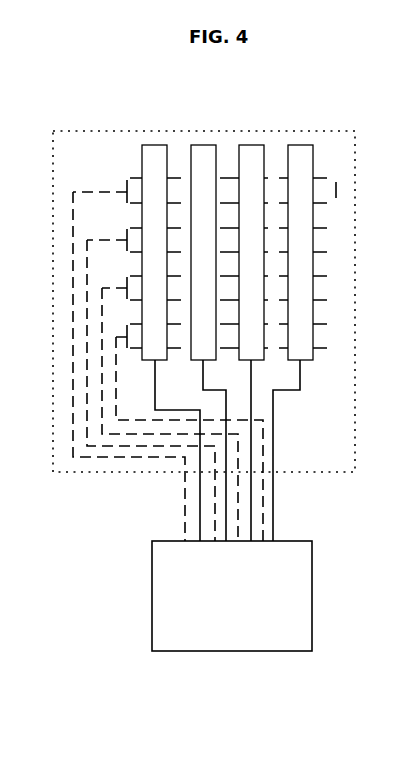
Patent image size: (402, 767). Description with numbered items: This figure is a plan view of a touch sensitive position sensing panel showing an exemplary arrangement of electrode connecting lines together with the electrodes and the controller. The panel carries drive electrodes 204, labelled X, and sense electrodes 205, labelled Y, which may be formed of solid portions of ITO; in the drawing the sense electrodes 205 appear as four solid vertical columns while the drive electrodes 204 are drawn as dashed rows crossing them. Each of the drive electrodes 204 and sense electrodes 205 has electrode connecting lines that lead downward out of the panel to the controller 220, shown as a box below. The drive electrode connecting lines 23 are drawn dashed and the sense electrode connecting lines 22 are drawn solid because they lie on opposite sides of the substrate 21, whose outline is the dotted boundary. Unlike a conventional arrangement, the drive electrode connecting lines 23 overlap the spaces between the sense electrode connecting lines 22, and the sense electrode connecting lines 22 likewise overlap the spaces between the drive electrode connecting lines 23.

The substrate 21 is at (343, 130).
The sense electrode connecting lines 22 is at (253, 397).
The drive electrode connecting lines 23 is at (90, 238).
The drive electrodes 204 is at (125, 180).
The sense electrodes 205 is at (253, 165).
The controller 220 is at (218, 651).